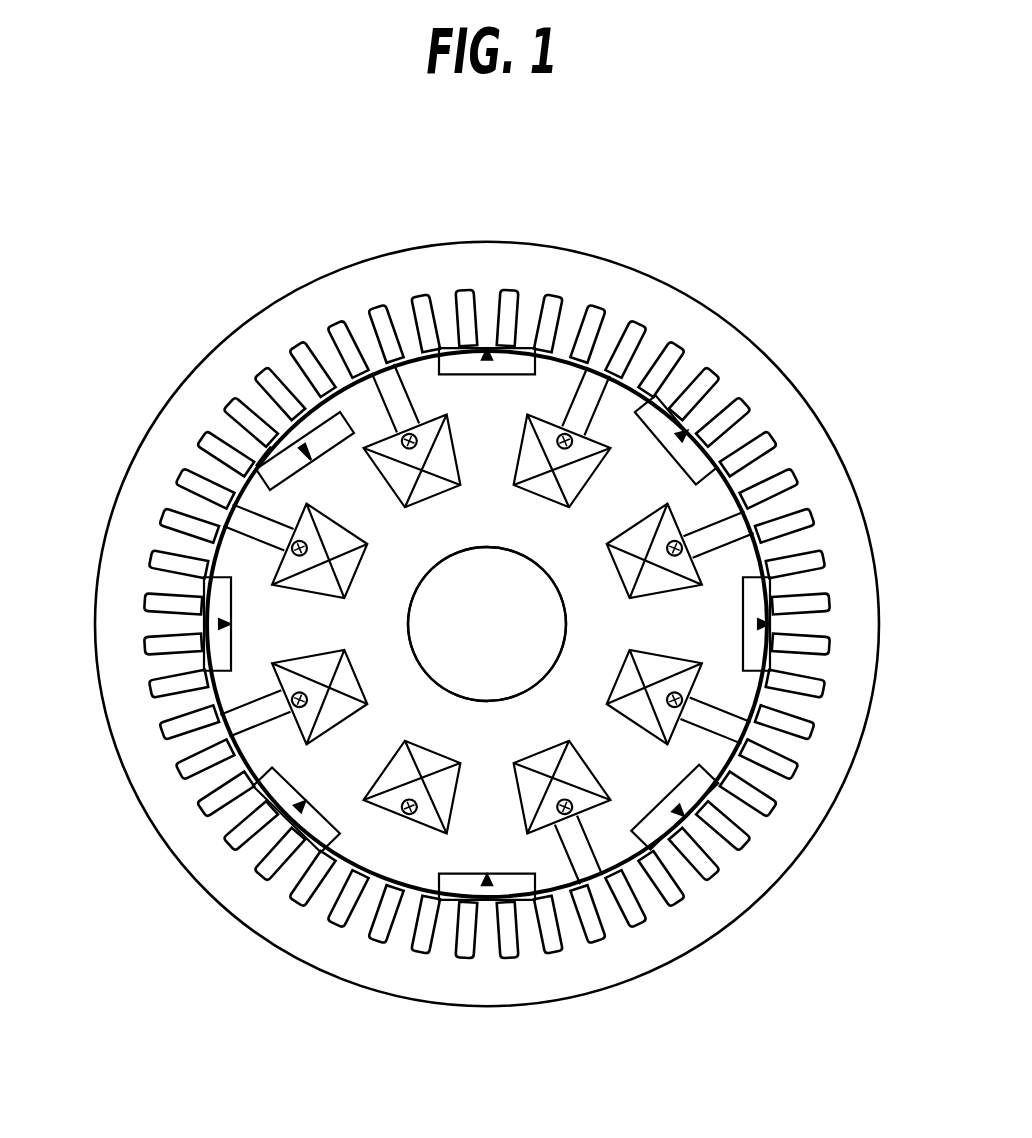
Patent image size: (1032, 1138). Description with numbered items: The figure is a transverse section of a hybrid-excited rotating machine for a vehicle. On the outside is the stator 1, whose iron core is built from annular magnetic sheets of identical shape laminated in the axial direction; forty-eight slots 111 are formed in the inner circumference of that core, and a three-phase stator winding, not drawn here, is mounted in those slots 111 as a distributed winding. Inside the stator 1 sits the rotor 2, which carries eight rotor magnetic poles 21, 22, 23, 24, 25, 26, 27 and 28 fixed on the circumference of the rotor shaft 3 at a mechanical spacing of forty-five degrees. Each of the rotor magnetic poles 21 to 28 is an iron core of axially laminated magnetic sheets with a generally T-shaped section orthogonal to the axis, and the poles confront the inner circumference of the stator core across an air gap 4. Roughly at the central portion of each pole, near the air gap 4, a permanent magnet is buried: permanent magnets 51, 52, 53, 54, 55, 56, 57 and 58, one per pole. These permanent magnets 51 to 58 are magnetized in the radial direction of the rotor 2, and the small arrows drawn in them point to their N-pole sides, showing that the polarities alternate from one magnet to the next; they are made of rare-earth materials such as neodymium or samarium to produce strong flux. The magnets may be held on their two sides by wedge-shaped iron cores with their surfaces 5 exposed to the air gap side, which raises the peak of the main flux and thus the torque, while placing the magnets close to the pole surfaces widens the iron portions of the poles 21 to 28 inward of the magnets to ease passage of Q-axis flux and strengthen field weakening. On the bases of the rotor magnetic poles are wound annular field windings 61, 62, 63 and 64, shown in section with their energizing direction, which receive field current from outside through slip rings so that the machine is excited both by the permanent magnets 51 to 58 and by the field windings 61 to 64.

The stator 1 is at (262, 322).
The rotor 2 is at (350, 470).
The rotor shaft 3 is at (527, 590).
The air gap 4 is at (578, 353).
The surfaces of the permanent magnets 5 is at (713, 450).
The rotor magnetic pole 21 is at (418, 377).
The rotor magnetic pole 22 is at (623, 402).
The rotor magnetic pole 23 is at (750, 560).
The rotor magnetic pole 24 is at (735, 775).
The rotor magnetic pole 25 is at (548, 883).
The rotor magnetic pole 26 is at (245, 770).
The rotor magnetic pole 27 is at (207, 558).
The rotor magnetic pole 28 is at (268, 537).
The permanent magnet 51 is at (512, 365).
The permanent magnet 52 is at (715, 447).
The permanent magnet 53 is at (763, 660).
The permanent magnet 54 is at (652, 822).
The permanent magnet 55 is at (453, 877).
The permanent magnet 56 is at (262, 822).
The permanent magnet 57 is at (215, 660).
The permanent magnet 58 is at (268, 458).
The field winding 61 is at (430, 494).
The field winding 62 is at (630, 566).
The field winding 63 is at (423, 765).
The field winding 64 is at (352, 553).
The slots 111 is at (338, 917).